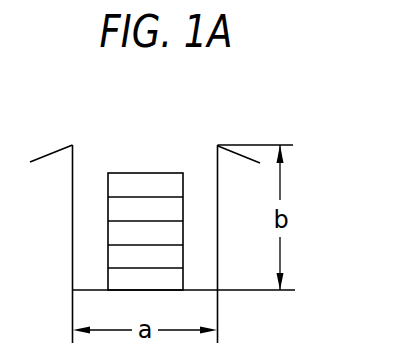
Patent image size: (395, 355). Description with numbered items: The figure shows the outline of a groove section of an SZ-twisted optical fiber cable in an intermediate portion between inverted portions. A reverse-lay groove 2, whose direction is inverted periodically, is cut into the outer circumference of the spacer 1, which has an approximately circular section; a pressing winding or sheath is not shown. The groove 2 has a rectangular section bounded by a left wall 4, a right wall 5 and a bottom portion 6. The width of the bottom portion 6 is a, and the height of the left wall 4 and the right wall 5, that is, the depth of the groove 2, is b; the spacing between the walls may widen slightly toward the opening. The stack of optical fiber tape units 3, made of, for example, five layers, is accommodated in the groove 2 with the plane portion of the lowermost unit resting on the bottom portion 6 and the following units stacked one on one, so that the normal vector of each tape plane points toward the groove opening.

The spacer 1 is at (52, 157).
The groove 2 is at (106, 157).
The stack of optical fiber tape units 3 is at (160, 173).
The left wall 4 is at (80, 240).
The right wall 5 is at (218, 237).
The bottom portion 6 is at (98, 291).